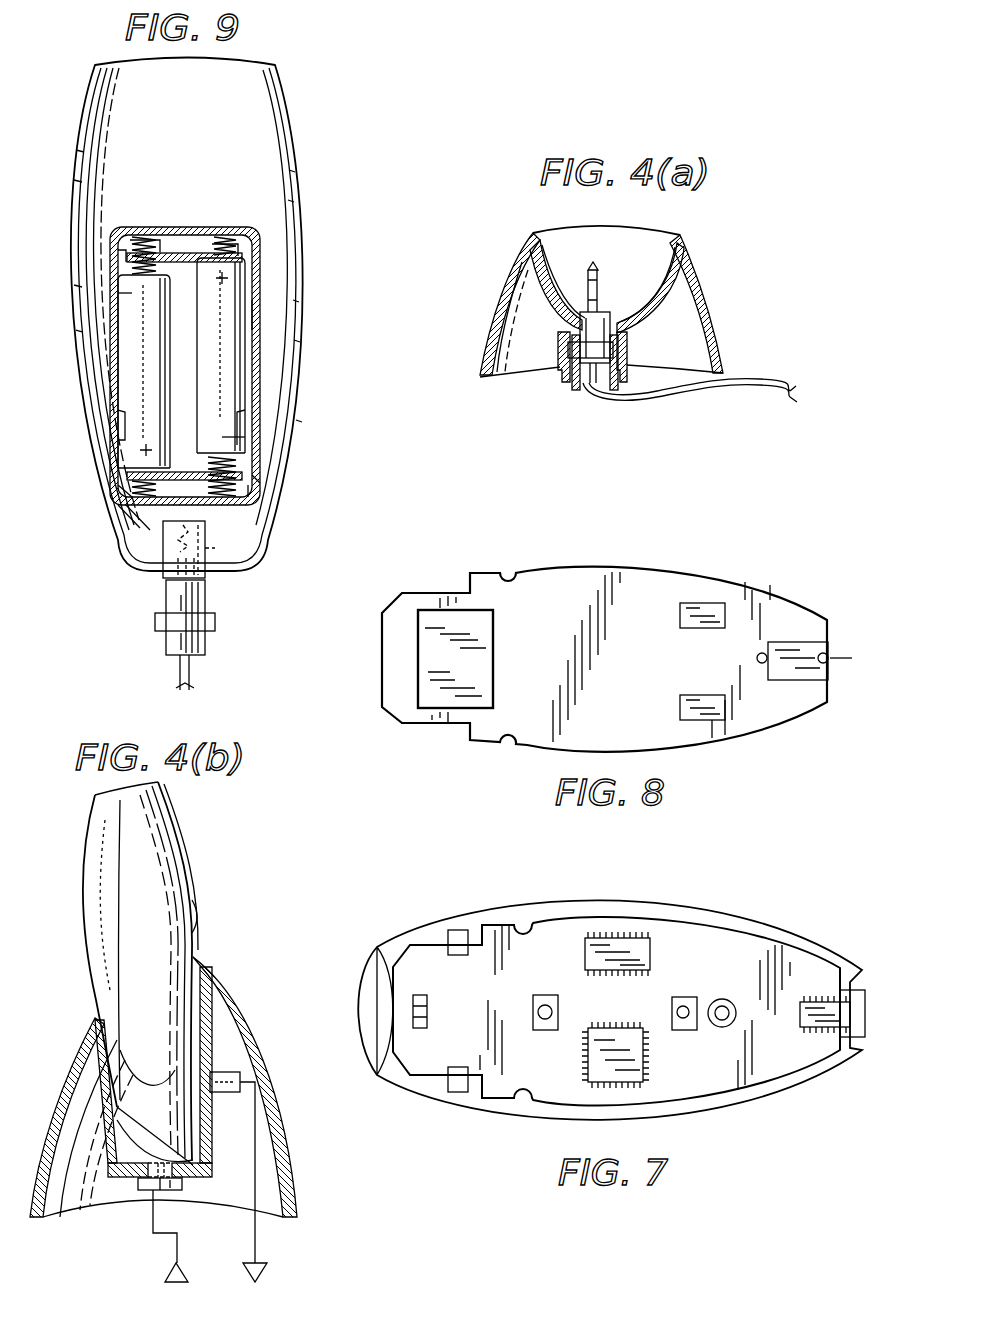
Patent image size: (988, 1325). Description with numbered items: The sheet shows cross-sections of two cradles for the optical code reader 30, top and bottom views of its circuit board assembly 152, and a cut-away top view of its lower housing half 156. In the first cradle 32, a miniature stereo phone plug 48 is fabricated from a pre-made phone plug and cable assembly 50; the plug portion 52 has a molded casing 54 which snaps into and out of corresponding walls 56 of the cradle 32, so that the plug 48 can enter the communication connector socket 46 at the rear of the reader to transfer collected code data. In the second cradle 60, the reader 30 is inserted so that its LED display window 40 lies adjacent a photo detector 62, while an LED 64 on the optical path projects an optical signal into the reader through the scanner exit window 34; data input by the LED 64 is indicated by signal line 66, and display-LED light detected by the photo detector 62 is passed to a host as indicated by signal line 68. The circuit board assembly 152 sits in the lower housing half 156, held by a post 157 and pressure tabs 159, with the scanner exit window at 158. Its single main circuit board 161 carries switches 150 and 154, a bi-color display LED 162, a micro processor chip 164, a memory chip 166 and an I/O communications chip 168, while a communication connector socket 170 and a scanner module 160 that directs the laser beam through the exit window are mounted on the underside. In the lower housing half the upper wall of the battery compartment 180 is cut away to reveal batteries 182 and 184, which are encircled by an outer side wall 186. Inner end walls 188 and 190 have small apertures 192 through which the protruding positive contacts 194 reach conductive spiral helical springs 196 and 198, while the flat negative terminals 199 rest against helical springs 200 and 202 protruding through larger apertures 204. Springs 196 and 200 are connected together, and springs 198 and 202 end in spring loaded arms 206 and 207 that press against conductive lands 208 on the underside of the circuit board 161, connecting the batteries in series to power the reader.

In FIG. 4b, the code reader 30 is at (191, 828).
In FIG. 4a, the cradle 32 is at (710, 283).
In FIG. 4b, the scanner exit window 34 is at (117, 1148).
In FIG. 4b, the LED display window 40 is at (212, 1060).
In FIG. 9, the communication connector socket 46 is at (166, 580).
In FIG. 8, the communication connector socket 46 is at (830, 660).
In FIG. 4a, the plug 48 is at (592, 265).
In FIG. 4a, the miniature phone plug and cable assembly 50 is at (683, 400).
In FIG. 4a, the plug portion 52 is at (590, 380).
In FIG. 4a, the molded casing 54 is at (607, 373).
In FIG. 4a, the walls 56 is at (558, 363).
In FIG. 4b, the cradle 60 is at (305, 1150).
In FIG. 4b, the photo detector 62 is at (240, 1075).
In FIG. 4b, the LED 64 is at (175, 1193).
In FIG. 4b, the signal line 66 is at (150, 1217).
In FIG. 4b, the signal line 68 is at (260, 1242).
In FIG. 7, the switch 150 is at (545, 1030).
In FIG. 8, the circuit board assembly 152 is at (620, 580).
In FIG. 7, the circuit board assembly 152 is at (500, 1085).
In FIG. 7, the switch 154 is at (685, 997).
In FIG. 9, the lower housing half 156 is at (292, 318).
In FIG. 7, the lower housing half 156 is at (672, 903).
In FIG. 7, the post 157 is at (722, 1027).
In FIG. 7, the scanner exit window 158 is at (362, 1010).
In FIG. 7, the pressure tabs 159 is at (458, 930).
In FIG. 8, the scanner module 160 is at (458, 635).
In FIG. 8, the main circuit board 161 is at (755, 588).
In FIG. 7, the main circuit board 161 is at (788, 972).
In FIG. 7, the display LED 162 is at (430, 1008).
In FIG. 7, the micro processor chip 164 is at (612, 1055).
In FIG. 7, the memory chip 166 is at (612, 945).
In FIG. 7, the I/O communications chip 168 is at (825, 1022).
In FIG. 9, the communication connector socket 170 is at (205, 555).
In FIG. 8, the communication connector socket 170 is at (795, 645).
In FIG. 9, the battery compartment 180 is at (258, 368).
In FIG. 9, the battery 182 is at (144, 371).
In FIG. 9, the battery 184 is at (221, 355).
In FIG. 9, the outer side wall 186 is at (255, 392).
In FIG. 9, the inner end wall 188 is at (252, 257).
In FIG. 9, the inner end wall 190 is at (250, 477).
In FIG. 9, the apertures 192 is at (250, 243).
In FIG. 9, the contacts 194 is at (212, 250).
In FIG. 9, the spiral helical spring 196 is at (228, 252).
In FIG. 9, the spiral helical spring 198 is at (118, 508).
In FIG. 9, the negative terminals 199 is at (132, 293).
In FIG. 9, the helical spring 200 is at (140, 243).
In FIG. 9, the helical spring 202 is at (252, 503).
In FIG. 9, the apertures 204 is at (118, 248).
In FIG. 9, the spring loaded arm 206 is at (125, 418).
In FIG. 9, the spring loaded arm 207 is at (237, 420).
In FIG. 8, the conductive lands 208 is at (680, 613).